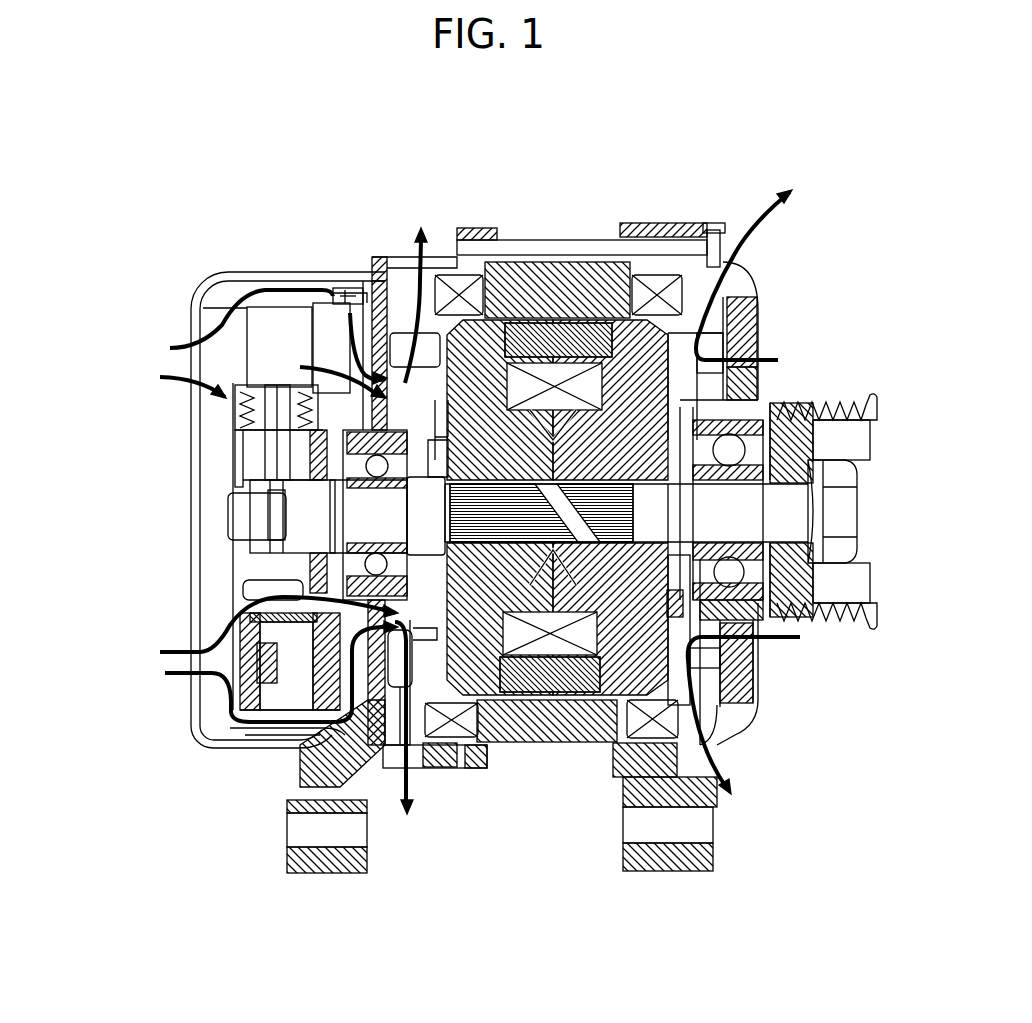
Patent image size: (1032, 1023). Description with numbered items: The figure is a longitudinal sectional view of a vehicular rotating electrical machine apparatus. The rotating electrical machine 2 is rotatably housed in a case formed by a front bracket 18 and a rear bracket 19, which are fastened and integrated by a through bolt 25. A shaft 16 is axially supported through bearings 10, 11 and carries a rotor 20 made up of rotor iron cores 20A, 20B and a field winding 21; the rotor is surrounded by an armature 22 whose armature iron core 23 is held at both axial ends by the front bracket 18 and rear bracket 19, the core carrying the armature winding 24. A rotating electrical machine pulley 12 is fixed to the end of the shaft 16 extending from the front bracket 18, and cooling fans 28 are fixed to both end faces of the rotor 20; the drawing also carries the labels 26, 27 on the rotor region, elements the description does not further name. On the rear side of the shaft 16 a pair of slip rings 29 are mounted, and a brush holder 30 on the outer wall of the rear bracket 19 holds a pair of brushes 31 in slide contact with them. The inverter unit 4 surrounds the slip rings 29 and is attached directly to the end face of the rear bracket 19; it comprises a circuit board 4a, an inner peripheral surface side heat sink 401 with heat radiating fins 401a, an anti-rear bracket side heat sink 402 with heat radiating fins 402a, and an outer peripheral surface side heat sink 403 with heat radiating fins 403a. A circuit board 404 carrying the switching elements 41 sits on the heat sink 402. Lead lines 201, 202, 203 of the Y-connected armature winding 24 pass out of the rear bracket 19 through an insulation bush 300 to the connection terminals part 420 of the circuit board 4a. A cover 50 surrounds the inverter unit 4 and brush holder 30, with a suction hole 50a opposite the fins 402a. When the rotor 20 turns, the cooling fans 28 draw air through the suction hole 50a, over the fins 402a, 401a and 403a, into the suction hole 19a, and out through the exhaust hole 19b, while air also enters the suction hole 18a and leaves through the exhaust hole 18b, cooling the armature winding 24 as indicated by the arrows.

The rotating electrical machine 2 is at (519, 232).
The inverter unit 4 is at (248, 293).
The circuit board 4a is at (267, 712).
The bearing 10 is at (760, 410).
The bearing 11 is at (360, 540).
The rotating electrical machine pulley 12 is at (847, 613).
The shaft 16 is at (780, 506).
The front bracket 18 is at (765, 275).
The suction hole 18a is at (758, 340).
The exhaust hole 18b is at (740, 282).
The rear bracket 19 is at (397, 245).
The suction hole 19a is at (290, 745).
The exhaust hole 19b is at (390, 757).
The rotor 20 is at (667, 688).
The rotor iron core 20A is at (622, 585).
The rotor iron core 20B is at (447, 743).
The field winding 21 is at (523, 742).
The armature 22 is at (550, 765).
The armature iron core 23 is at (555, 275).
The armature winding 24 is at (453, 283).
The through bolt 25 is at (722, 240).
The rotor pole core 26 is at (578, 335).
The rotor pole core 27 is at (557, 619).
The cooling fan 28 is at (382, 262).
The slip ring 29 is at (207, 573).
The brush holder 30 is at (230, 433).
The brush 31 is at (285, 500).
The switching element 41 is at (265, 667).
The cover 50 is at (195, 290).
The suction hole 50a is at (193, 340).
The lead line 201 is at (403, 375).
The lead line 202 is at (550, 674).
The lead line 203 is at (554, 401).
The insulation bush 300 is at (337, 290).
The inner peripheral surface side heat sink 401 is at (217, 598).
The heat radiating fin 401a is at (247, 590).
The anti-rear bracket side heat sink 402 is at (260, 680).
The heat radiating fin 402a is at (215, 375).
The outer peripheral surface side heat sink 403 is at (258, 705).
The heat radiating fin 403a is at (266, 318).
The circuit board 404 is at (258, 650).
The connection terminals part 420 is at (347, 292).